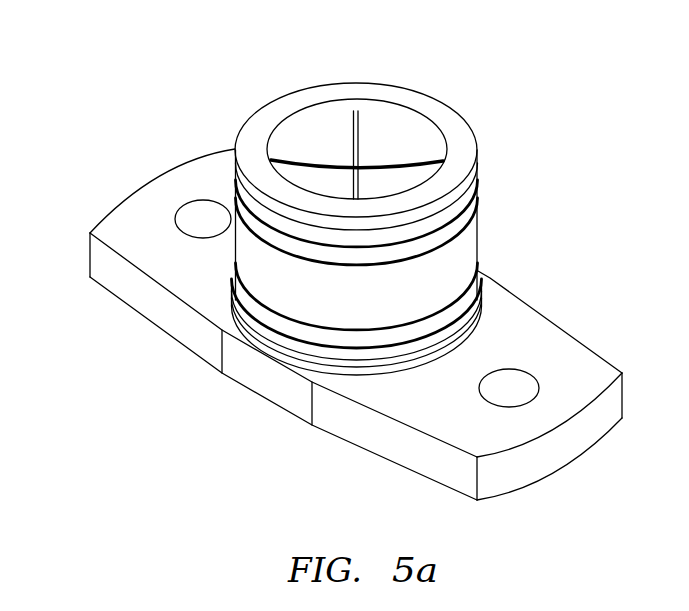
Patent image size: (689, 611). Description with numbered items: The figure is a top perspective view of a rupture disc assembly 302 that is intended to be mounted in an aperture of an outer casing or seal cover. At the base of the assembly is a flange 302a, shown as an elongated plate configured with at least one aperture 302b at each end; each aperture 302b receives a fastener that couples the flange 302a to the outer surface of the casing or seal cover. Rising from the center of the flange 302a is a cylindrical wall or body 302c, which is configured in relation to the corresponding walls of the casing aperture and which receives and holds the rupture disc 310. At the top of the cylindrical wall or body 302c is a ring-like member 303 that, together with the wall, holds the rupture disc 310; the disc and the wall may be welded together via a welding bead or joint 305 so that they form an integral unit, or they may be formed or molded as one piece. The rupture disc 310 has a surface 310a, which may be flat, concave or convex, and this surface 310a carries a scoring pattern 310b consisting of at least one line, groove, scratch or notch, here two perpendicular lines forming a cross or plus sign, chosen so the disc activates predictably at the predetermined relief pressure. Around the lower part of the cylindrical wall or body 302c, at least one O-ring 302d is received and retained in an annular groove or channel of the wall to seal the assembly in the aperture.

The rupture disc assembly 302 is at (547, 82).
The flange 302a is at (134, 217).
The aperture 302b is at (204, 220).
The cylindrical wall or body 302c is at (273, 270).
The O-ring 302d is at (458, 221).
The ring-like member 303 is at (468, 141).
The welding bead or joint 305 is at (448, 207).
The rupture disc 310 is at (332, 114).
The surface 310a is at (308, 143).
The scoring pattern 310b is at (352, 132).